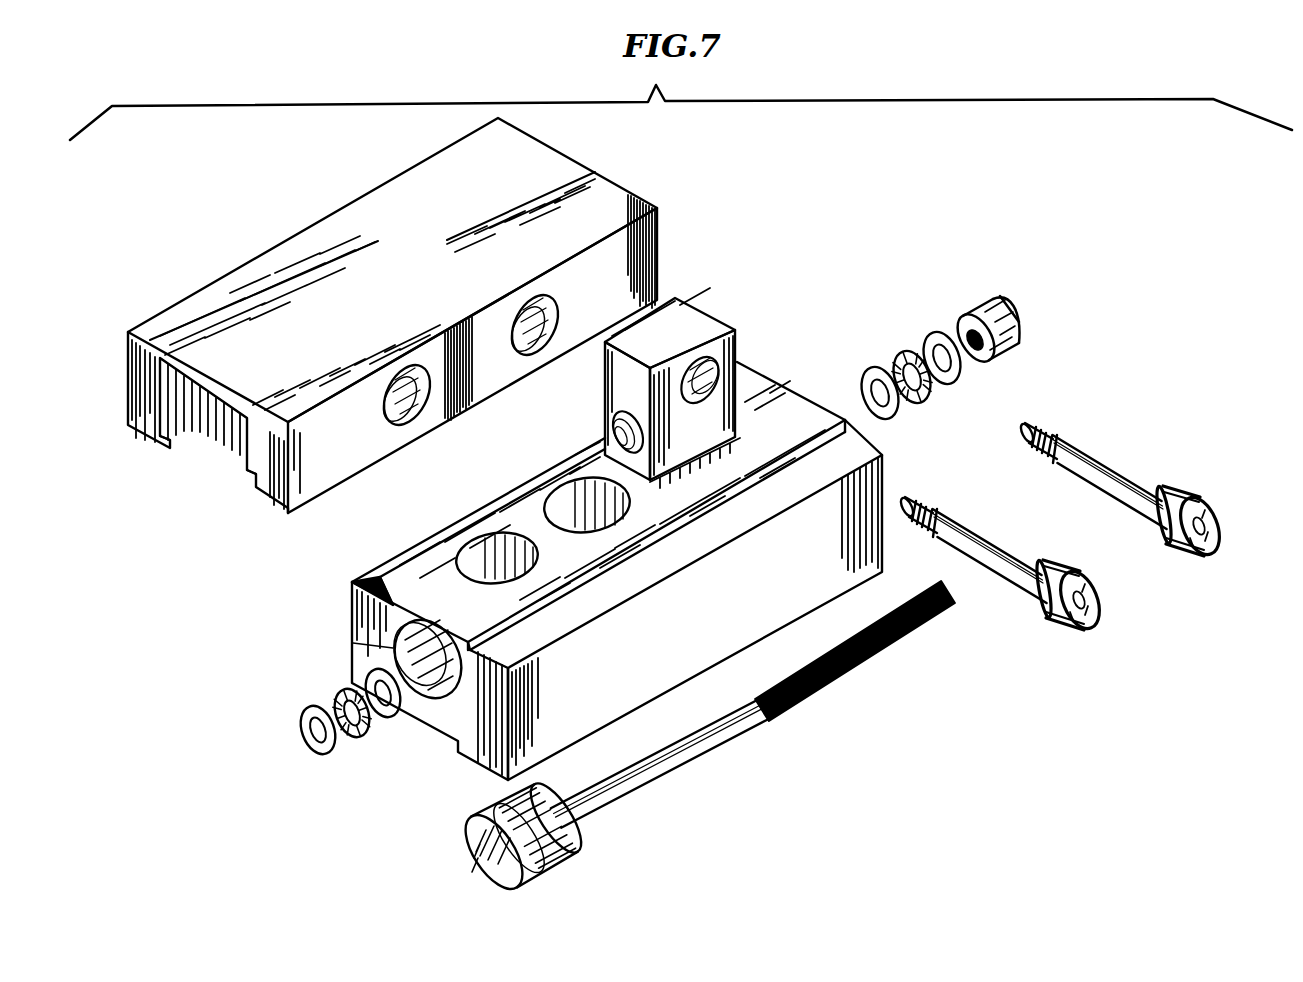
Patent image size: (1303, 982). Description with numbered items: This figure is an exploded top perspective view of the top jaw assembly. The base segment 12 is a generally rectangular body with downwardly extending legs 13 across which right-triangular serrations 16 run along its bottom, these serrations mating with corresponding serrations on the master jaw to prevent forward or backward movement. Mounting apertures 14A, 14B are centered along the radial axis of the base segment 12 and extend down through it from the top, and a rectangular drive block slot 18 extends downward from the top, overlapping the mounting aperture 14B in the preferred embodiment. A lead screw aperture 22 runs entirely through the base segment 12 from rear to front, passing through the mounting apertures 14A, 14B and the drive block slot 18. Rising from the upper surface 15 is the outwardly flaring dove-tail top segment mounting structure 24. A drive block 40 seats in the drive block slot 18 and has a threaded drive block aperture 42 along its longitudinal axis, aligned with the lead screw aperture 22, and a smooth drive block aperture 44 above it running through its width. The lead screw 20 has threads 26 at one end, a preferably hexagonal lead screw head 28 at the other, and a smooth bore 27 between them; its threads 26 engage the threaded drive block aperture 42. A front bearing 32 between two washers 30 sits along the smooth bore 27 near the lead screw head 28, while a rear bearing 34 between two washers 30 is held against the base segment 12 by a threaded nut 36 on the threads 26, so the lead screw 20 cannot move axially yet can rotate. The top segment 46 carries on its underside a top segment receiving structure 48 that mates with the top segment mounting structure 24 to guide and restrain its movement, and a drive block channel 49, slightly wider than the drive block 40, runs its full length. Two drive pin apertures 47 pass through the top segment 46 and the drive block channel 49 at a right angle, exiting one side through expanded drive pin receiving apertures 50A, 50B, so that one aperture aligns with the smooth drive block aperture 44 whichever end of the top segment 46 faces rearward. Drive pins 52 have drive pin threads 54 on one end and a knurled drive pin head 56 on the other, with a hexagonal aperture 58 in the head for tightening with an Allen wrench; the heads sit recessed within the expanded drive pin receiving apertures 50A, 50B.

The base segment 12 is at (599, 585).
The downwardly extending legs 13 is at (470, 770).
The mounting aperture 14A is at (470, 556).
The mounting aperture 14B is at (562, 484).
The upper surface 15 is at (497, 505).
The serrations 16 is at (775, 630).
The drive block slot 18 is at (580, 455).
The lead screw 20 is at (666, 739).
The lead screw aperture 22 is at (352, 641).
The top segment mounting structure 24 is at (430, 580).
The threads 26 is at (868, 660).
The smooth bore 27 is at (648, 793).
The lead screw head 28 is at (448, 880).
The washers 30 is at (873, 370).
The front bearing 32 is at (352, 738).
The rear bearing 34 is at (906, 352).
The threaded nut 36 is at (1024, 312).
The drive block 40 is at (667, 379).
The threaded drive block aperture 42 is at (624, 425).
The smooth drive block aperture 44 is at (735, 358).
The top segment 46 is at (382, 333).
The drive pin apertures 47 is at (512, 310).
The top segment receiving structure 48 is at (166, 449).
The drive block channel 49 is at (220, 447).
The expanded drive pin receiving aperture 50A is at (392, 412).
The expanded drive pin receiving aperture 50B is at (556, 325).
The drive pins 52 is at (1082, 536).
The drive pin threads 54 is at (927, 500).
The drive pin head 56 is at (1116, 591).
The hexagonal aperture 58 is at (1092, 607).